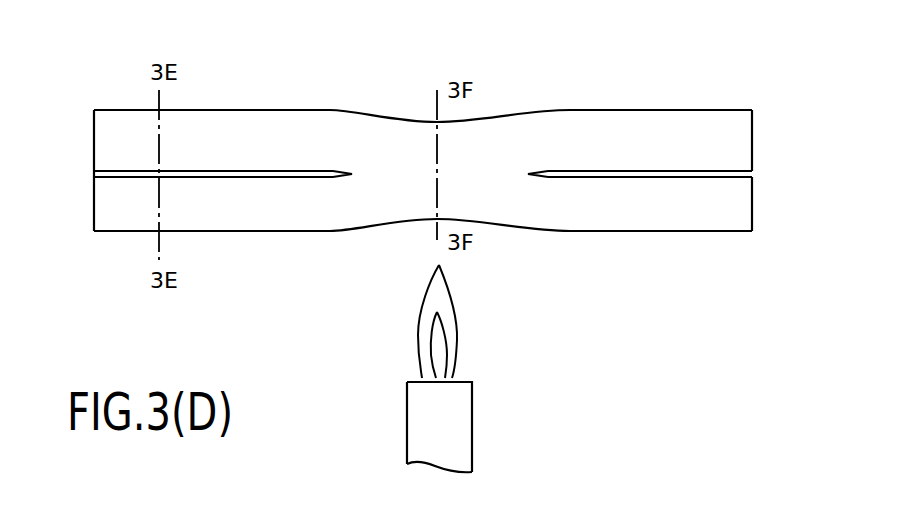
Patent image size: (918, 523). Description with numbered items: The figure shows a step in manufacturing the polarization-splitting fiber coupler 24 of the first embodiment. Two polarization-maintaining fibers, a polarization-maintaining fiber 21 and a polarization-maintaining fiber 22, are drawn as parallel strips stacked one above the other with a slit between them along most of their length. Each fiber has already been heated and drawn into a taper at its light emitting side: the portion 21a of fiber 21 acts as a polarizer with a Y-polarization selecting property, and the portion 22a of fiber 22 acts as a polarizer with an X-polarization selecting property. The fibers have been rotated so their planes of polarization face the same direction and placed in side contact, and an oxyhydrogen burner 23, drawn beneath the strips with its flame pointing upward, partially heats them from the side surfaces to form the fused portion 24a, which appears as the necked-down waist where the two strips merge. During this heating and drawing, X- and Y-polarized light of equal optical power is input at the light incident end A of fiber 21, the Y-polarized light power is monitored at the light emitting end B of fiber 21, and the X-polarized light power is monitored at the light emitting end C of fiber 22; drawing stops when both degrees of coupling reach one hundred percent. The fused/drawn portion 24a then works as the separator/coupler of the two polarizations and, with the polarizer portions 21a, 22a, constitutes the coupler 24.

The polarization-maintaining fiber 21 is at (212, 110).
The polarization-maintaining fiber 22 is at (233, 231).
The portion of the light emitting side 21a is at (695, 110).
The portion 22a is at (695, 231).
The polarization-splitting fiber coupler 24 is at (558, 100).
The fused portion 24a is at (397, 118).
The oxyhydrogen burner 23 is at (407, 410).
The light incident end A is at (94, 132).
The light emitting end B is at (752, 127).
The light emitting end C is at (752, 203).